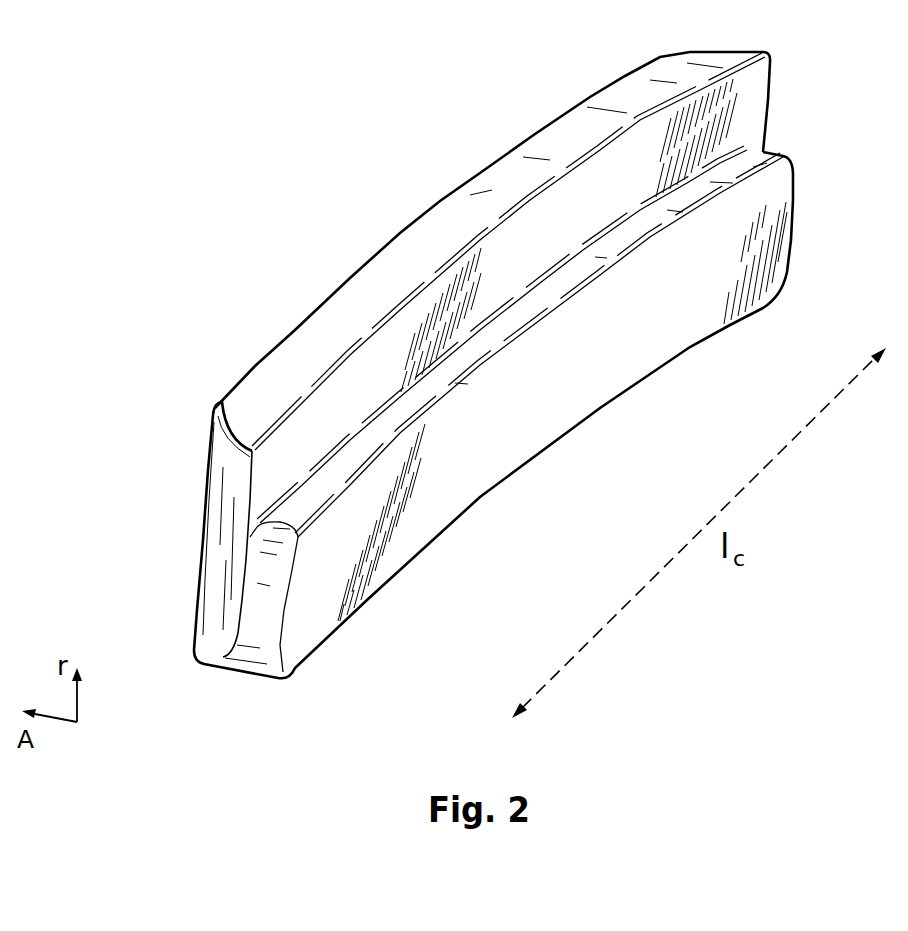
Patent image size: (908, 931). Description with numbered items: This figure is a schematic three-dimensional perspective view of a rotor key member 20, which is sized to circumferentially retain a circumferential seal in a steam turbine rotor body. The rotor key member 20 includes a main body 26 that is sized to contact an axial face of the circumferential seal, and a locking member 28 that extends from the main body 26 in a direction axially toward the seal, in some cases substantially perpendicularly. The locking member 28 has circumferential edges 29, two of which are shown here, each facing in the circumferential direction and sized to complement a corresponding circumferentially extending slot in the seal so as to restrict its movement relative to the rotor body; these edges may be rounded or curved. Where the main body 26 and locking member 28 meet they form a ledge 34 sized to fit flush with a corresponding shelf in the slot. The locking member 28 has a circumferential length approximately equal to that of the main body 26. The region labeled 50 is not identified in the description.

The rotor key member 20 is at (209, 182).
The main body 26 is at (473, 198).
The locking member 28 is at (634, 358).
The circumferential edge 29 is at (792, 238).
The ledge 34 is at (346, 453).
The coating region on side face 50 is at (583, 501).